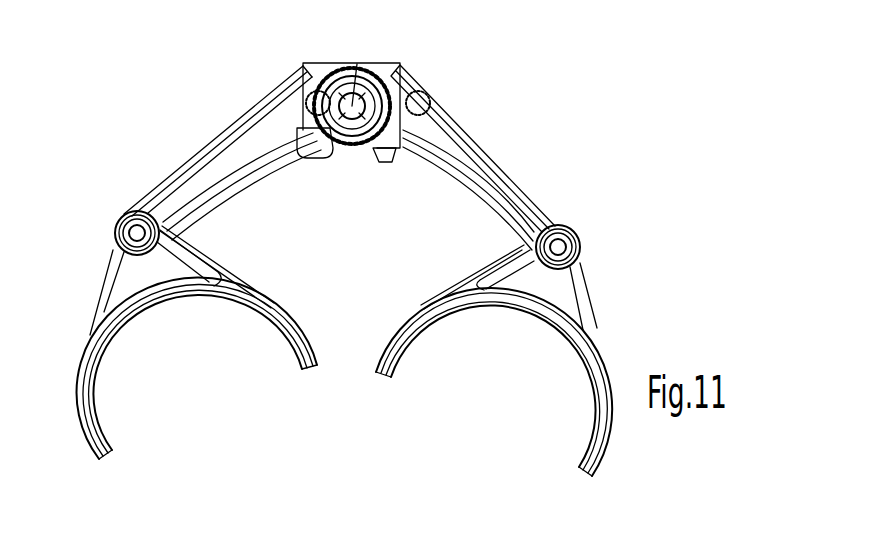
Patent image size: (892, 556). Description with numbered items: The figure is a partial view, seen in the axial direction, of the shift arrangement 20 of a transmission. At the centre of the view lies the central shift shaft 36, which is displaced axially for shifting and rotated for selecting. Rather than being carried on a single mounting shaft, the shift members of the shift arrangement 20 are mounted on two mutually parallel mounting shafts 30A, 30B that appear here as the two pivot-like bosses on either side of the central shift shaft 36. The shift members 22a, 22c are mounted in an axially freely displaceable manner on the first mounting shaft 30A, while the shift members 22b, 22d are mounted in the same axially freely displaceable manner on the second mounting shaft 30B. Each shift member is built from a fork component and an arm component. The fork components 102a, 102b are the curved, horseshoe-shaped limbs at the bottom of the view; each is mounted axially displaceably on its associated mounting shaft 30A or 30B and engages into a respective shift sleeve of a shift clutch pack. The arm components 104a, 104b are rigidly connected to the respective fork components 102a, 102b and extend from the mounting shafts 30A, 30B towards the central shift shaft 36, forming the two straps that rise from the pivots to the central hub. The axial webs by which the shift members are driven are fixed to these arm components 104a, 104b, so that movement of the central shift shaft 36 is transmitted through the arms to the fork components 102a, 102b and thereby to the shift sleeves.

The shift arrangement 20 is at (617, 170).
The shift member 22a is at (177, 165).
The shift member 22b is at (527, 173).
The shift member 22c is at (305, 152).
The shift member 22d is at (392, 158).
The first mounting shaft 30A is at (120, 215).
The second mounting shaft 30B is at (580, 242).
The central shift shaft 36 is at (358, 63).
The fork component 102a is at (133, 311).
The fork component 102b is at (458, 308).
The arm component 104a is at (227, 127).
The arm component 104b is at (477, 140).